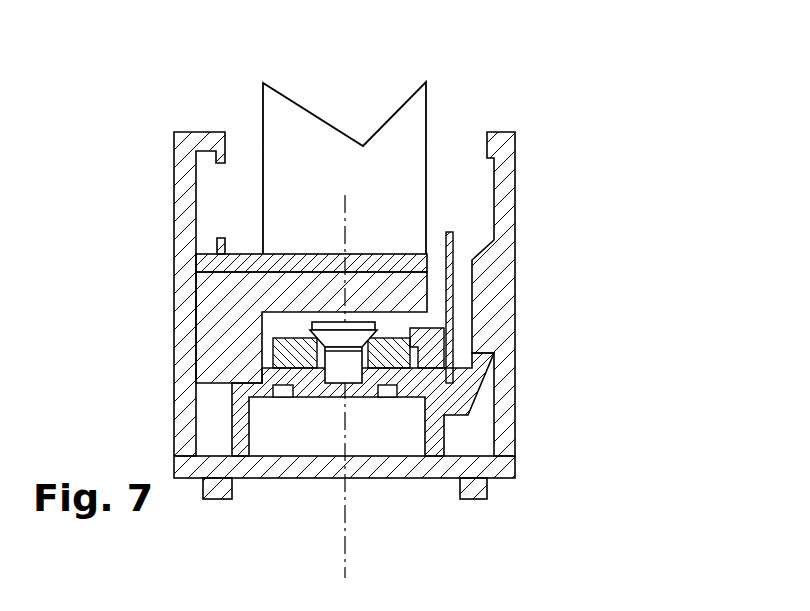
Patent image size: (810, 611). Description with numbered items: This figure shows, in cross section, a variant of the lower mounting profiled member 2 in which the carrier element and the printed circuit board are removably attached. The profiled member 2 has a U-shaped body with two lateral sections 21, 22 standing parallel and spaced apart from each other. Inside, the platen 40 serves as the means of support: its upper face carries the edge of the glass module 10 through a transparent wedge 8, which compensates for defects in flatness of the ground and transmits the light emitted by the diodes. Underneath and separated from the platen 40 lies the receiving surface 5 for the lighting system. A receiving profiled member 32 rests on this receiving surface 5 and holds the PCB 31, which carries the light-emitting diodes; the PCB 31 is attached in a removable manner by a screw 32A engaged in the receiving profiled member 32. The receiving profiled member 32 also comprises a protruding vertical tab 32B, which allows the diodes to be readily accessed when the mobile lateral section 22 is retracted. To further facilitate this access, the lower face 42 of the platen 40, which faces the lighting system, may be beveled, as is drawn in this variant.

The lower mounting profiled member 2 is at (542, 492).
The receiving surface 5 is at (270, 397).
The wedge 8 is at (248, 255).
The glass module 10 is at (417, 112).
The lateral section 21 is at (185, 198).
The mobile lateral section 22 is at (500, 184).
The printed circuit board 31 is at (380, 348).
The receiving profiled member 32 is at (437, 372).
The screw 32A is at (300, 336).
The protruding vertical tab 32B is at (453, 238).
The platen 40 is at (400, 290).
The lower face 42 is at (365, 312).